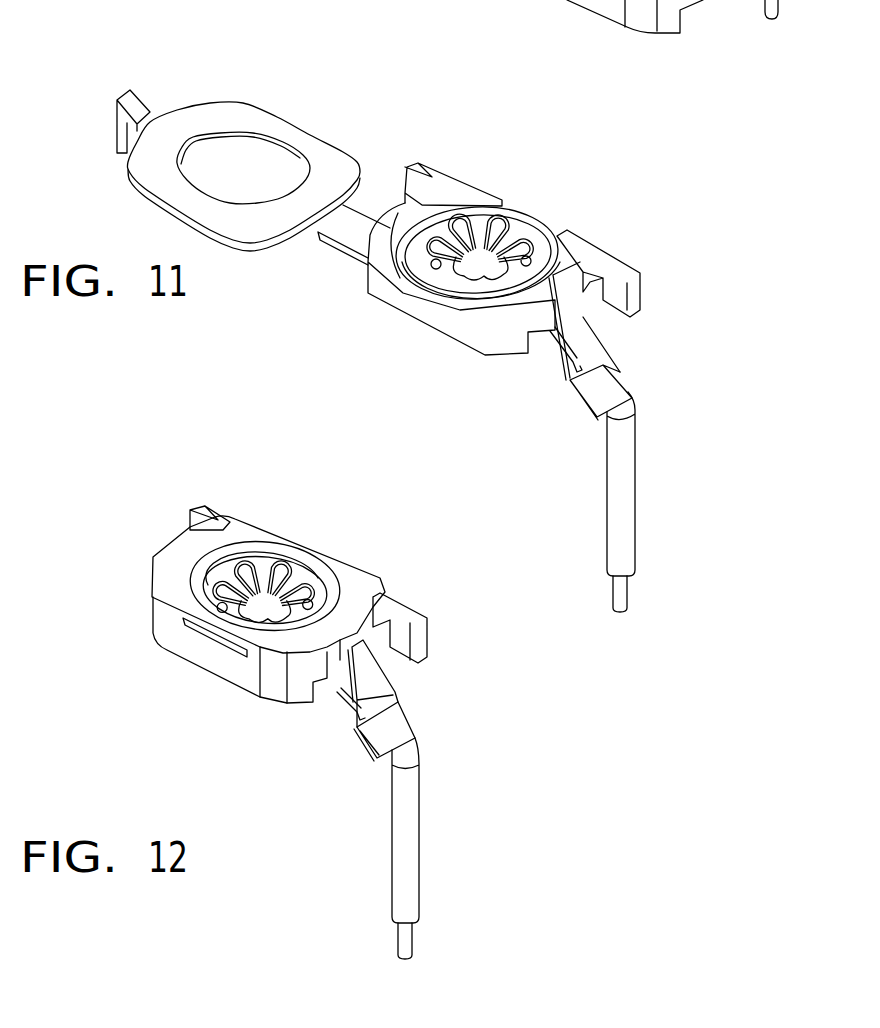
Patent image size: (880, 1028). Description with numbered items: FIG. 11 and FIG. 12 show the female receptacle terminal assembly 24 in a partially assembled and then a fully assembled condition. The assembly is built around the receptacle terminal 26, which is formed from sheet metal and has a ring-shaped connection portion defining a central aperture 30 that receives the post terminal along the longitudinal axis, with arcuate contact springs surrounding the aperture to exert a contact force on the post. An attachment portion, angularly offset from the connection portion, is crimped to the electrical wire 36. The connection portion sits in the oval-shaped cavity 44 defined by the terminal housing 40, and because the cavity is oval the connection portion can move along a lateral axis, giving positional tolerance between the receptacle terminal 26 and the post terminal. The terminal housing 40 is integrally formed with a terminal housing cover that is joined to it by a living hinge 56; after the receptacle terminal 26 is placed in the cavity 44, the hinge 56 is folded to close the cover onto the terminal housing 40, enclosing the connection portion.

In FIG. 12, the receptacle terminal assembly 24 is at (346, 539).
In FIG. 11, the receptacle terminal 26 is at (479, 214).
In FIG. 11, the central aperture 30 is at (202, 120).
In FIG. 11, the electrical wire 36 is at (623, 494).
In FIG. 12, the electrical wire 36 is at (408, 872).
In FIG. 11, the terminal housing 40 is at (428, 310).
In FIG. 11, the oval-shaped cavity 44 is at (402, 236).
In FIG. 11, the living hinge 56 is at (478, 0).